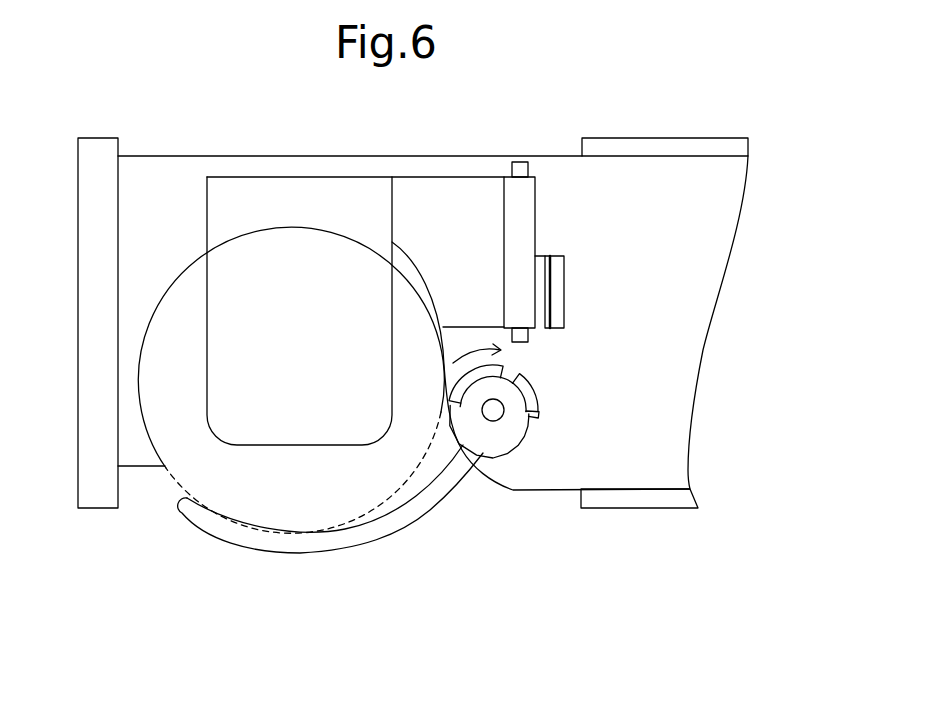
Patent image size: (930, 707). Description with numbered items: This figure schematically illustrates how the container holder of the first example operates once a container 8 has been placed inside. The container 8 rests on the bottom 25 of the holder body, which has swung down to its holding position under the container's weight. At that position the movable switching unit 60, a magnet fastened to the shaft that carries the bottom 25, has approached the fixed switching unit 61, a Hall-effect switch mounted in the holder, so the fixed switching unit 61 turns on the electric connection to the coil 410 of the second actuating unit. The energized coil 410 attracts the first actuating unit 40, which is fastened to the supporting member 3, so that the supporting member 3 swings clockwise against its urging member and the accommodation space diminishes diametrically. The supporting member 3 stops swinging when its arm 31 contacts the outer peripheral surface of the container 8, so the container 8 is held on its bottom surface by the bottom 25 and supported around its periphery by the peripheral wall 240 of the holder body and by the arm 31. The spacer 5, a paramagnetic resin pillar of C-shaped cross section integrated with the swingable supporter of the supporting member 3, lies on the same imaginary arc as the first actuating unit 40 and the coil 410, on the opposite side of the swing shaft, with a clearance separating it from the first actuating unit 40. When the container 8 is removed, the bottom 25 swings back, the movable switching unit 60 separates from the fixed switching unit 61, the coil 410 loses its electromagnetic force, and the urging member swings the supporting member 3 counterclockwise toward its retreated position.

The peripheral wall 240 is at (278, 232).
The bottom 25 is at (328, 172).
The movable switching unit 60 is at (541, 256).
The fixed switching unit 61 is at (566, 262).
The first actuating unit 40 is at (497, 364).
The coil 410 is at (532, 391).
The spacer 5 is at (520, 437).
The container 8 is at (410, 477).
The supporting member 3 is at (348, 518).
The arm 31 is at (357, 540).